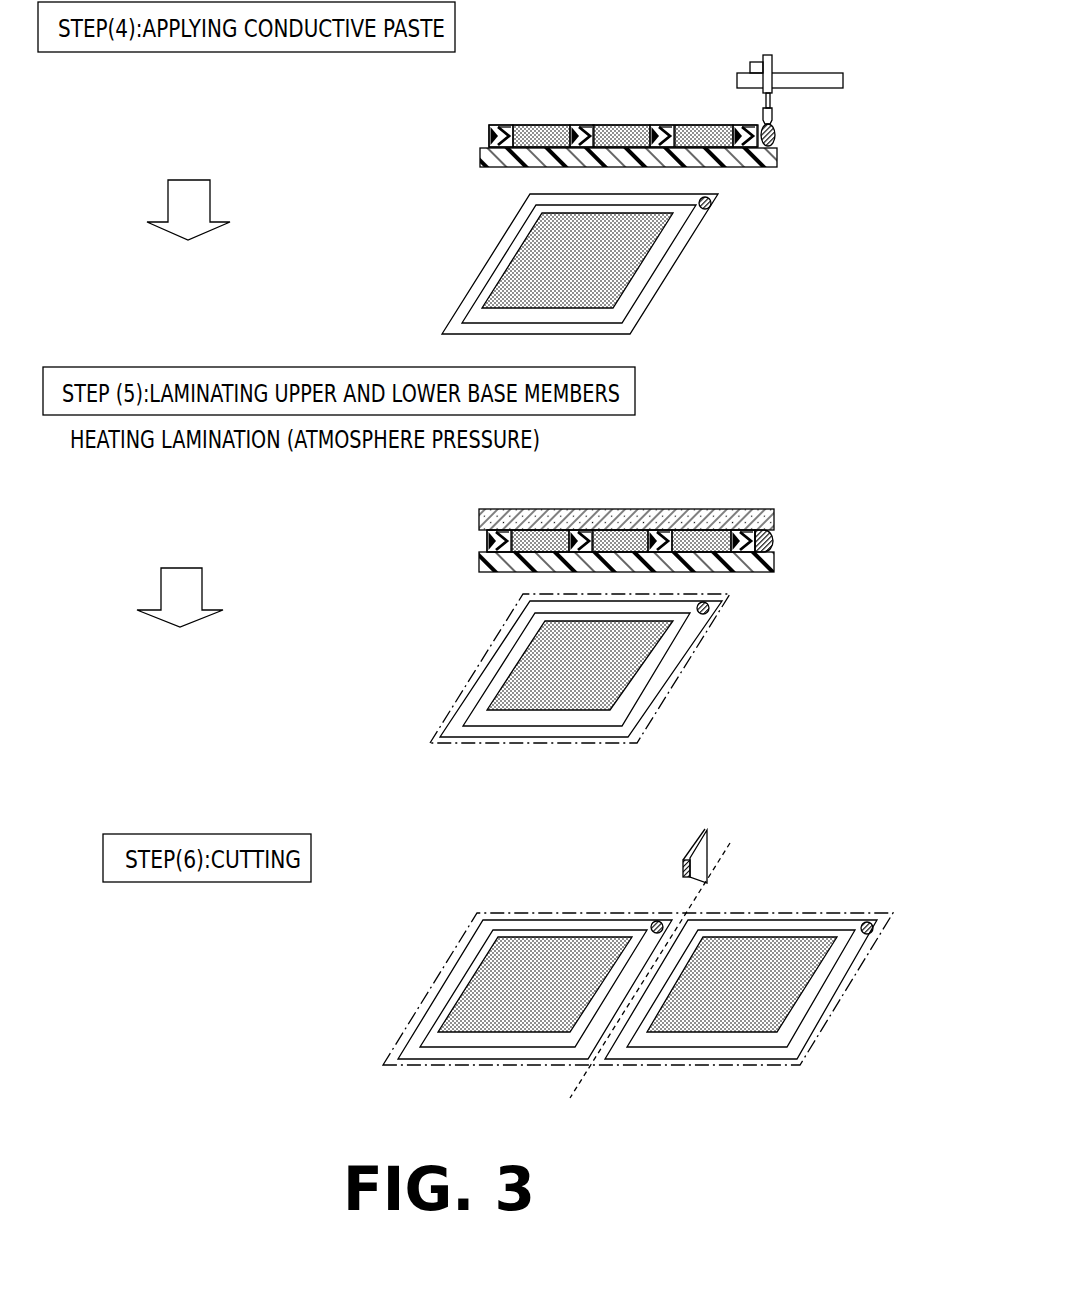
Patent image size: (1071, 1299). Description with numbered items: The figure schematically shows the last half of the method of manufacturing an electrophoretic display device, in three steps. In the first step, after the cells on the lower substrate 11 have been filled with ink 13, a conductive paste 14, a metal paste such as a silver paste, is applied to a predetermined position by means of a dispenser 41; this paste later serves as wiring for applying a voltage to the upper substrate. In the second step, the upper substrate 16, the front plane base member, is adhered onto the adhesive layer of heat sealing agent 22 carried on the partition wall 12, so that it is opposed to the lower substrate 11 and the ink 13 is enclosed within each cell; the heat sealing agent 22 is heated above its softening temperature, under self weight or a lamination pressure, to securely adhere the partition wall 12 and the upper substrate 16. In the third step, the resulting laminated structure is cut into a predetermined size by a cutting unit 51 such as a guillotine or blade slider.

The lower substrate 11 is at (492, 157).
The partition wall 12 is at (488, 135).
The ink 13 is at (543, 133).
The conductive paste 14 is at (777, 133).
The upper substrate 16 is at (672, 520).
The heat sealing agent 22 is at (494, 127).
The dispenser 41 is at (764, 57).
The cutting unit 51 is at (695, 853).